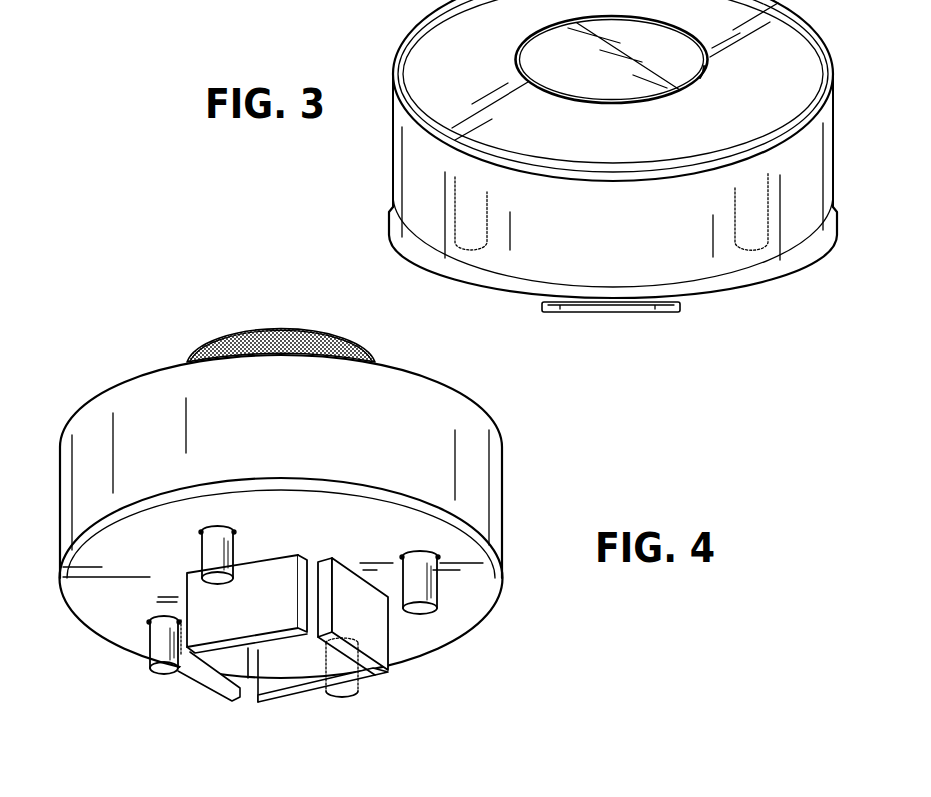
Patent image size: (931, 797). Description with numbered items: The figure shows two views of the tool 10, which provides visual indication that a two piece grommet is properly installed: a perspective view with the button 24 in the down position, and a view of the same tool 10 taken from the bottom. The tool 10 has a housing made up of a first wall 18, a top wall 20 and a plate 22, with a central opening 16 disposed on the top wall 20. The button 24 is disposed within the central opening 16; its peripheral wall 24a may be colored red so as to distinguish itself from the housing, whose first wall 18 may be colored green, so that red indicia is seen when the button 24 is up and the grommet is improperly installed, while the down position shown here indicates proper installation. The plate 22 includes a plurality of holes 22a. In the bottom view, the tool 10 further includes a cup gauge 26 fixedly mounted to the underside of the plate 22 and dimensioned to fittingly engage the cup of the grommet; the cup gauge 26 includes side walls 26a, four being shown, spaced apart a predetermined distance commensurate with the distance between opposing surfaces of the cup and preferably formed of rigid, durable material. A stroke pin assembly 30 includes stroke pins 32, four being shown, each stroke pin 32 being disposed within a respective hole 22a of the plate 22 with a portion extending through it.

In FIG. 4, the tool 10 is at (527, 458).
In FIG. 3, the central opening 16 is at (702, 80).
In FIG. 3, the first wall 18 is at (627, 241).
In FIG. 4, the first wall 18 is at (296, 429).
In FIG. 3, the top wall 20 is at (675, 141).
In FIG. 3, the plate 22 is at (755, 273).
In FIG. 4, the plate 22 is at (480, 600).
In FIG. 4, the holes 22a is at (228, 530).
In FIG. 3, the button 24 is at (594, 75).
In FIG. 4, the button 24 is at (278, 323).
In FIG. 4, the peripheral wall 24a is at (313, 332).
In FIG. 3, the cup gauge 26 is at (592, 315).
In FIG. 4, the cup gauge 26 is at (231, 706).
In FIG. 4, the side walls 26a is at (254, 623).
In FIG. 4, the stroke pin assembly 30 is at (146, 676).
In FIG. 4, the stroke pin 32 is at (210, 551).